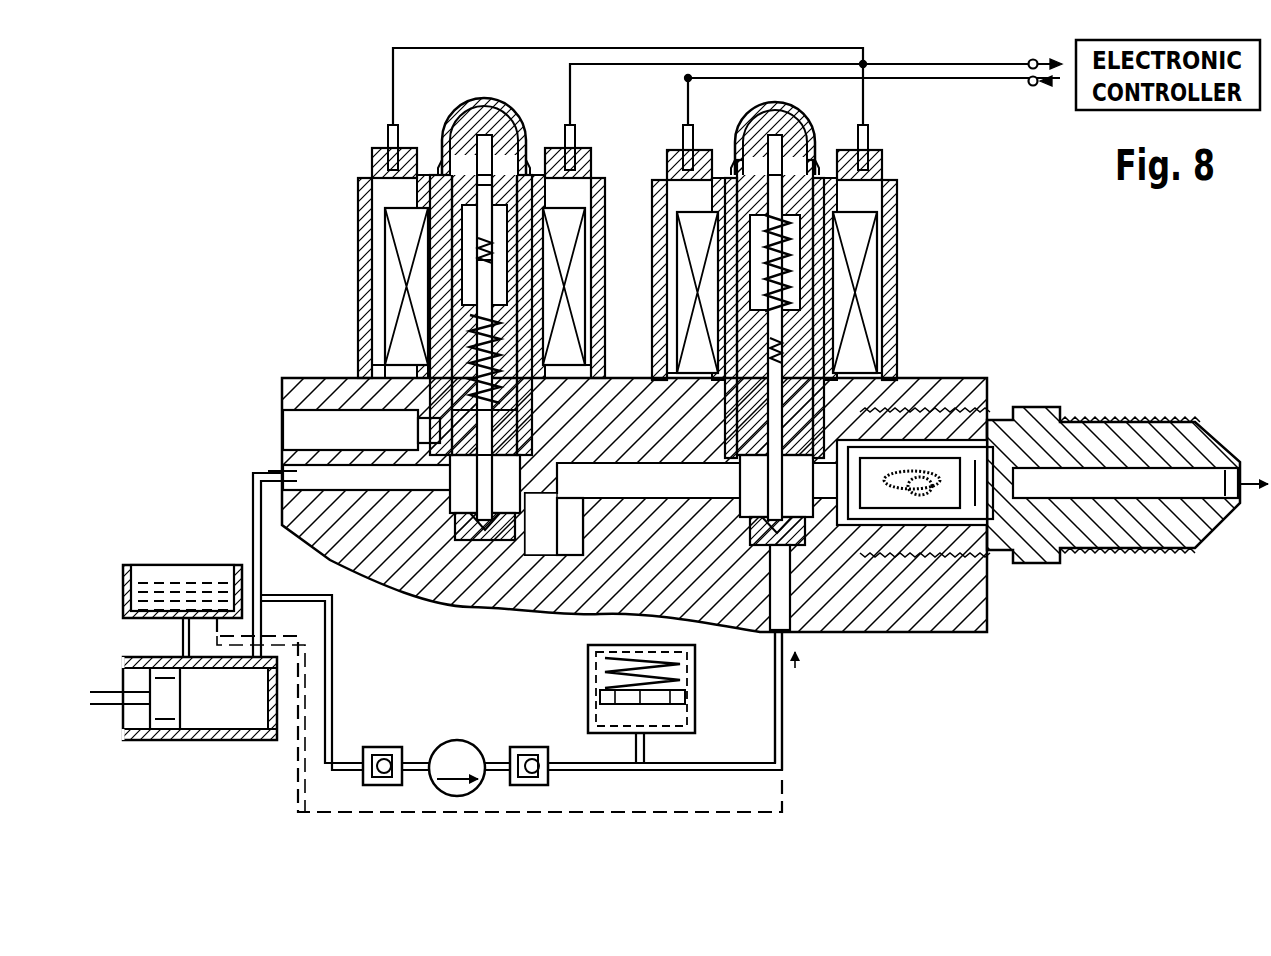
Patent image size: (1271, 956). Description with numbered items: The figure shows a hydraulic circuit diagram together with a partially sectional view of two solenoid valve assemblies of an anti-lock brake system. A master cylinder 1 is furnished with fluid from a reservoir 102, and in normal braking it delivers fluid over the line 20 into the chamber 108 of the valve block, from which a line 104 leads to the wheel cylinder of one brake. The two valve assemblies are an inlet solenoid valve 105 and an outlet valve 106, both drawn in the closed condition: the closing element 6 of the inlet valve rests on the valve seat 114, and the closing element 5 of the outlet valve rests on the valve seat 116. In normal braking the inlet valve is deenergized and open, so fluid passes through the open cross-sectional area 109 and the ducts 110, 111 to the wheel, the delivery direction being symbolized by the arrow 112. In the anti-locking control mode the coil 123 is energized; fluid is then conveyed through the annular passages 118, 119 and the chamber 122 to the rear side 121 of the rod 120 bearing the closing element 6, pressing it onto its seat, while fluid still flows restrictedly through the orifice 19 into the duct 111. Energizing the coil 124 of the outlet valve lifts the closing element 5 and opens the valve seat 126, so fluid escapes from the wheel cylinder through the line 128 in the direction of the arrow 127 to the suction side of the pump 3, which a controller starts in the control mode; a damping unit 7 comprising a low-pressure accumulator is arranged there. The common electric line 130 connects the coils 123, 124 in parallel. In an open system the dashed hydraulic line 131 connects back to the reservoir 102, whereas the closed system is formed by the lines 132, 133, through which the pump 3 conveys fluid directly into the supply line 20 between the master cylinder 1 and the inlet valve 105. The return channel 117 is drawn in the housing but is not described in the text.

The master cylinder 1 is at (218, 742).
The pump 3 is at (455, 742).
The closing element 5 is at (745, 560).
The closing element 6 is at (450, 538).
The damping unit 7 is at (588, 711).
The orifice 19 is at (555, 492).
The line 20 is at (253, 533).
The reservoir 102 is at (143, 572).
The line 104 is at (1166, 486).
The inlet solenoid valve 105 is at (355, 298).
The outlet valve 106 is at (910, 318).
The chamber 108 is at (425, 528).
The open cross-sectional area 109 is at (482, 550).
The duct 110 is at (565, 560).
The duct 111 is at (640, 483).
The arrow 112 is at (1258, 500).
The valve seat 114 is at (512, 545).
The valve seat 116 is at (805, 550).
The return channel 117 is at (367, 482).
The annular passage 118 is at (470, 355).
The annular passage 119 is at (452, 232).
The rod 120 is at (540, 430).
The rear side 121 is at (478, 110).
The chamber 122 is at (493, 105).
The coil 123 is at (585, 250).
The coil 124 is at (895, 245).
The valve seat 126 is at (765, 548).
The arrow 127 is at (795, 668).
The line 128 is at (785, 738).
The common electric line 130 is at (393, 70).
The hydraulic line 131 is at (698, 811).
The line 132 is at (598, 774).
The line 133 is at (333, 698).